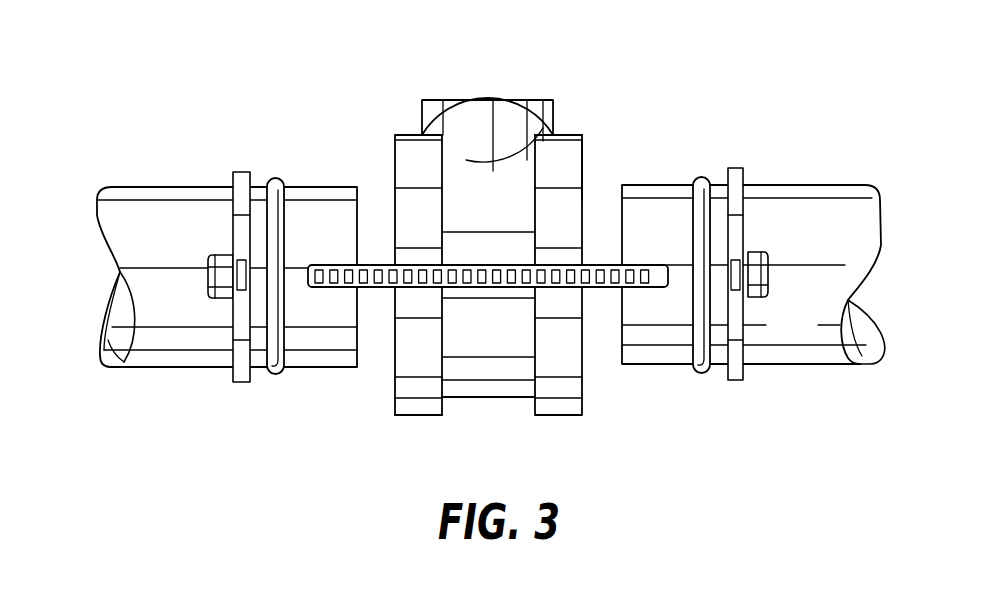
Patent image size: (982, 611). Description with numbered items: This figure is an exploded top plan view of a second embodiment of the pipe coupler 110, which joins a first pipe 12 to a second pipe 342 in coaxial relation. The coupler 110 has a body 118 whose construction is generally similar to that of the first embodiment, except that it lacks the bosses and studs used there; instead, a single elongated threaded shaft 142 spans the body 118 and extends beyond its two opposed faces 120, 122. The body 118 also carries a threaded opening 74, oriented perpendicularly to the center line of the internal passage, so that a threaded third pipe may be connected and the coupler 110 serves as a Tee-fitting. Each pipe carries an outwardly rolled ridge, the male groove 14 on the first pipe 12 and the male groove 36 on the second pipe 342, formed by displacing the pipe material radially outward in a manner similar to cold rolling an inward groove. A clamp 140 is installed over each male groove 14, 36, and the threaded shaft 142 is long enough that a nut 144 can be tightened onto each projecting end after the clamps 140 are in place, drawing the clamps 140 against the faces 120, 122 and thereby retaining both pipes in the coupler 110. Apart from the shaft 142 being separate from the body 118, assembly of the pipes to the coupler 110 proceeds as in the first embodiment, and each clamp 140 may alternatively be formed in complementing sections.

The first pipe 12 is at (176, 380).
The male groove 14 is at (276, 160).
The male groove 36 is at (703, 158).
The opening 74 is at (411, 106).
The coupler 110 is at (382, 157).
The body 118 is at (577, 122).
The face 120 is at (395, 392).
The face 122 is at (584, 162).
The clamp 140 is at (224, 228).
The elongated threaded shaft 142 is at (419, 256).
The nut 144 is at (198, 282).
The second tubular leg member 342 is at (817, 341).